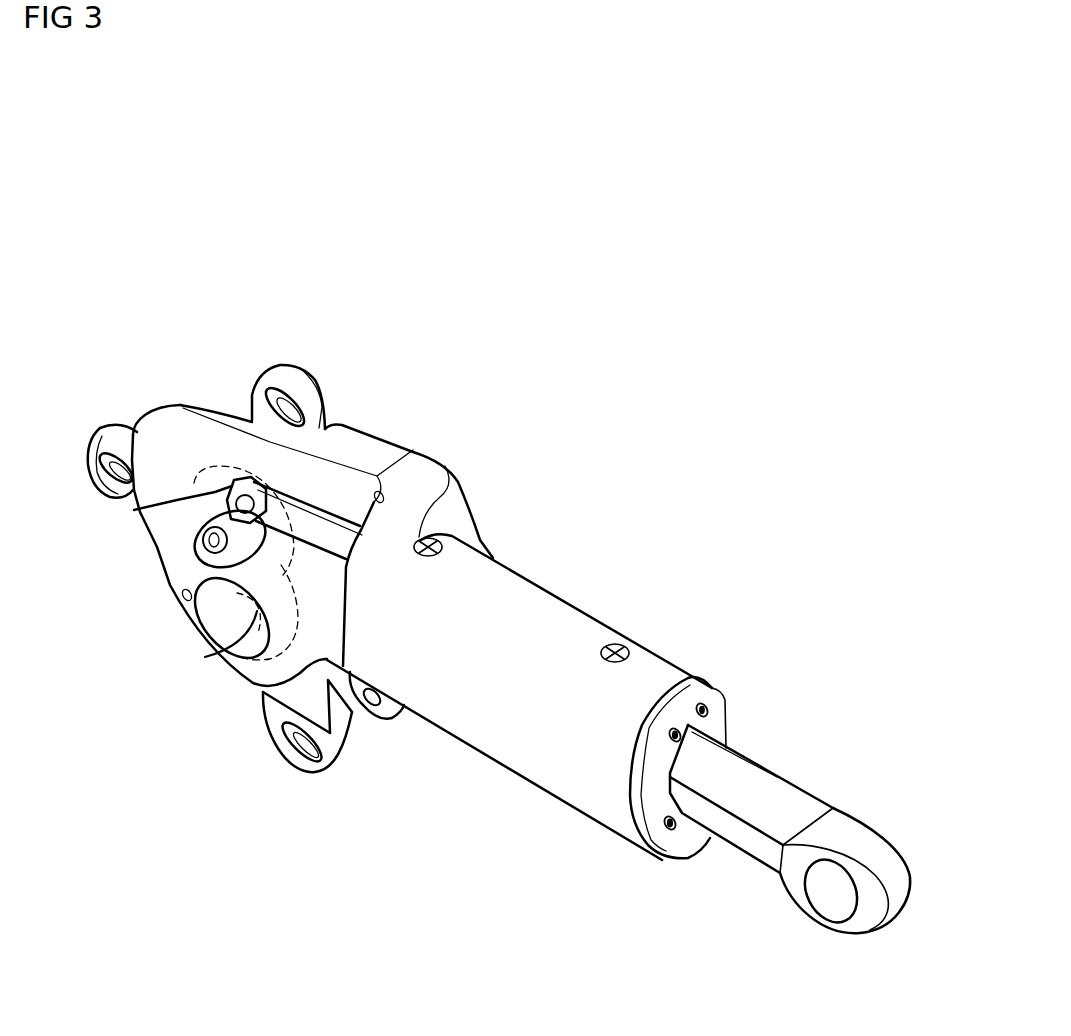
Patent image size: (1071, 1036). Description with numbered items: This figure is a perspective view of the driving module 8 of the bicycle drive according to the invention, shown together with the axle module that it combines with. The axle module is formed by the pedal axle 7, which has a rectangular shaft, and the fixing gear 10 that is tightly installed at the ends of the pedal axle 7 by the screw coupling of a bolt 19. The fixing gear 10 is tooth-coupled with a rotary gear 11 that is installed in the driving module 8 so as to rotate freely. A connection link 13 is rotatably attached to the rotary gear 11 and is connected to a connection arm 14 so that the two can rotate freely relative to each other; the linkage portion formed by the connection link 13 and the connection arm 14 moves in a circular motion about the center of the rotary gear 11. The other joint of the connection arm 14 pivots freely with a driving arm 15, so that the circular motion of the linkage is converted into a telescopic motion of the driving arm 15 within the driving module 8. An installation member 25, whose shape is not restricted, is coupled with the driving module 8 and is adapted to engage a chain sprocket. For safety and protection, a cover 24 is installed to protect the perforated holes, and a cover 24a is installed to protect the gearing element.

The pedal axle 7 is at (204, 658).
The driving module 8 is at (578, 617).
The fixing gear 10 is at (204, 572).
The rotary gear 11 is at (220, 471).
The connection link 13 is at (134, 510).
The connection arm 14 is at (332, 526).
The driving arm 15 is at (778, 803).
The bolt 19 is at (213, 618).
The cover 24 is at (703, 689).
The cover 24a is at (707, 710).
The installation member 25 is at (100, 440).